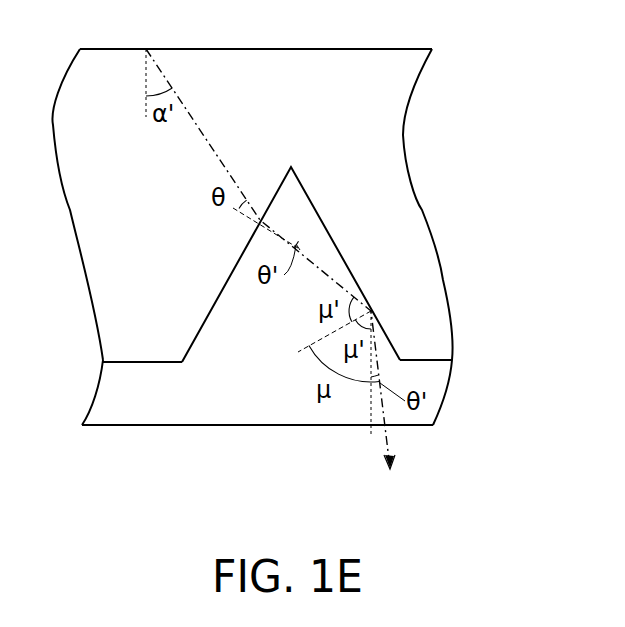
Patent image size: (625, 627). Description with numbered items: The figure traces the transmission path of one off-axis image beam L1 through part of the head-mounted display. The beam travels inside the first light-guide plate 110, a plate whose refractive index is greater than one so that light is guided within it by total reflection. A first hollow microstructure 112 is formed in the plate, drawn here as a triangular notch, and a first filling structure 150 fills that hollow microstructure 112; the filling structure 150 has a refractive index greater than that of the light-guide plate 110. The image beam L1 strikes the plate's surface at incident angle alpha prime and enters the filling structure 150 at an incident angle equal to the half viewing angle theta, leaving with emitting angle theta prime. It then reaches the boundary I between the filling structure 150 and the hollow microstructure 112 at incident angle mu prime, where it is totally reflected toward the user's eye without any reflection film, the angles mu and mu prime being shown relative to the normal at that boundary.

The first light-guide plate 110 is at (370, 160).
The first filling structure 150 is at (108, 397).
The first hollow microstructure 112 is at (340, 250).
The image beam L1 is at (194, 120).